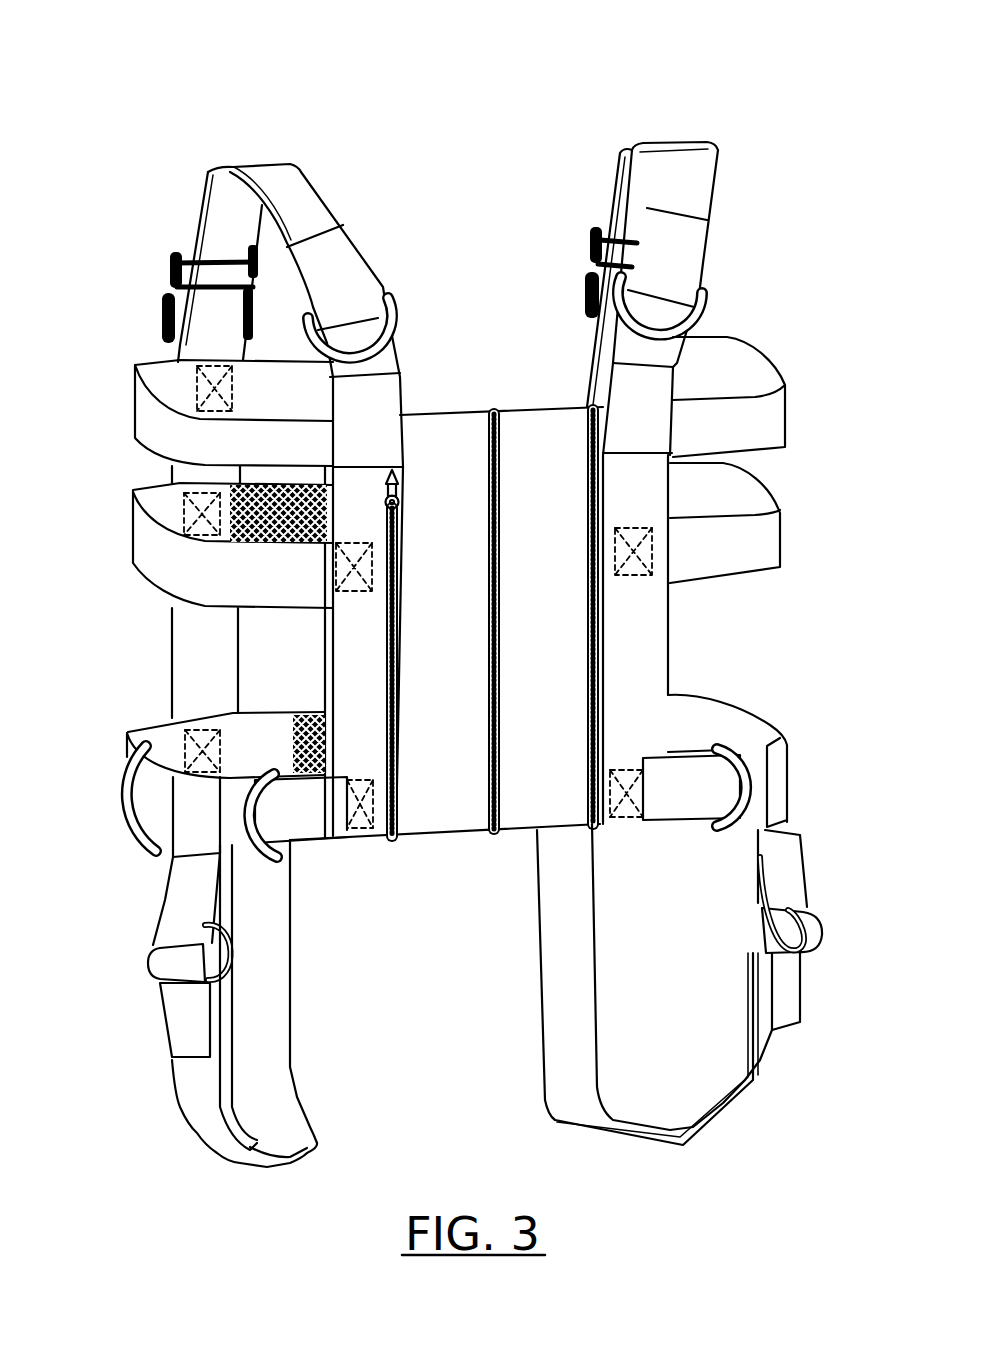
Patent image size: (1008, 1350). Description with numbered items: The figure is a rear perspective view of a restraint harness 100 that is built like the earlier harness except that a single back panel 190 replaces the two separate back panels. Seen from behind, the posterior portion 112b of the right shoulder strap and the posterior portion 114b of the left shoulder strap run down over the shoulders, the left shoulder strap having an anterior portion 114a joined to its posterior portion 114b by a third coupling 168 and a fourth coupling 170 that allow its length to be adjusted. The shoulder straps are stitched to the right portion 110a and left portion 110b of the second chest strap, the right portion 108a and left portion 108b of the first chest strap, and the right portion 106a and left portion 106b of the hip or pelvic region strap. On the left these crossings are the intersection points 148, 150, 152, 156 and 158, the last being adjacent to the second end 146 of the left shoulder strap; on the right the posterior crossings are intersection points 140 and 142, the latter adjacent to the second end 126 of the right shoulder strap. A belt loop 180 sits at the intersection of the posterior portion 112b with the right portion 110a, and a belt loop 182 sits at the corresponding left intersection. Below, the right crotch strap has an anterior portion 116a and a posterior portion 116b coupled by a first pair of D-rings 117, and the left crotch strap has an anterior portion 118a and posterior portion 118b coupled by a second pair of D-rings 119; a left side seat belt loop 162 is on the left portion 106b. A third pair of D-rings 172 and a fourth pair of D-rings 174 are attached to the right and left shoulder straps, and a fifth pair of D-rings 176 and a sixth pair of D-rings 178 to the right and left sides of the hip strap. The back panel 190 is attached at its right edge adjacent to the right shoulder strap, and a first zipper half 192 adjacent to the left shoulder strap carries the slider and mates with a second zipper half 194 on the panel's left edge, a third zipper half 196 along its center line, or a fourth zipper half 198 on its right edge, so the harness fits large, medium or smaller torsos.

The restraint harness 100 is at (312, 33).
The right portion of hip or pelvic region strap 106a is at (762, 716).
The left portion of hip or pelvic region strap 106b is at (128, 742).
The right portion of first chest strap 108a is at (783, 537).
The left portion of first chest strap 108b is at (135, 532).
The right portion of second chest strap 110a is at (787, 422).
The left portion of second chest strap 110b is at (135, 418).
The posterior portion of right shoulder strap 112b is at (718, 182).
The anterior portion of left shoulder strap 114a is at (172, 650).
The posterior portion of left shoulder strap 114b is at (322, 183).
The anterior portion of right crotch strap 116a is at (775, 1068).
The posterior portion of right crotch strap 116b is at (796, 860).
The first pair of D-rings 117 is at (757, 925).
The anterior portion of left crotch strap 118a is at (292, 1055).
The posterior portion of left crotch strap 118b is at (167, 873).
The second pair of D-rings 119 is at (150, 940).
The second end of right shoulder strap 126 is at (603, 830).
The intersection point 140 is at (655, 560).
The intersection point 142 is at (628, 820).
The second end of left shoulder strap 146 is at (336, 841).
The intersection point 148 is at (197, 382).
The intersection point 150 is at (188, 508).
The intersection point 152 is at (185, 745).
The intersection point 156 is at (336, 573).
The intersection point 158 is at (357, 780).
The left side seat belt loop 162 is at (130, 790).
The third coupling 168 is at (170, 264).
The fourth coupling 170 is at (165, 315).
The third pair of D-rings 172 is at (707, 302).
The fourth pair of D-rings 174 is at (378, 302).
The fifth pair of D-rings 176 is at (782, 790).
The sixth pair of D-rings 178 is at (262, 840).
The belt loop 180 is at (664, 433).
The belt loop 182 is at (387, 443).
The back panel 190 is at (538, 407).
The first zipper half 192 is at (387, 838).
The second zipper half 194 is at (395, 838).
The third zipper half 196 is at (488, 645).
The fourth zipper half 198 is at (586, 670).